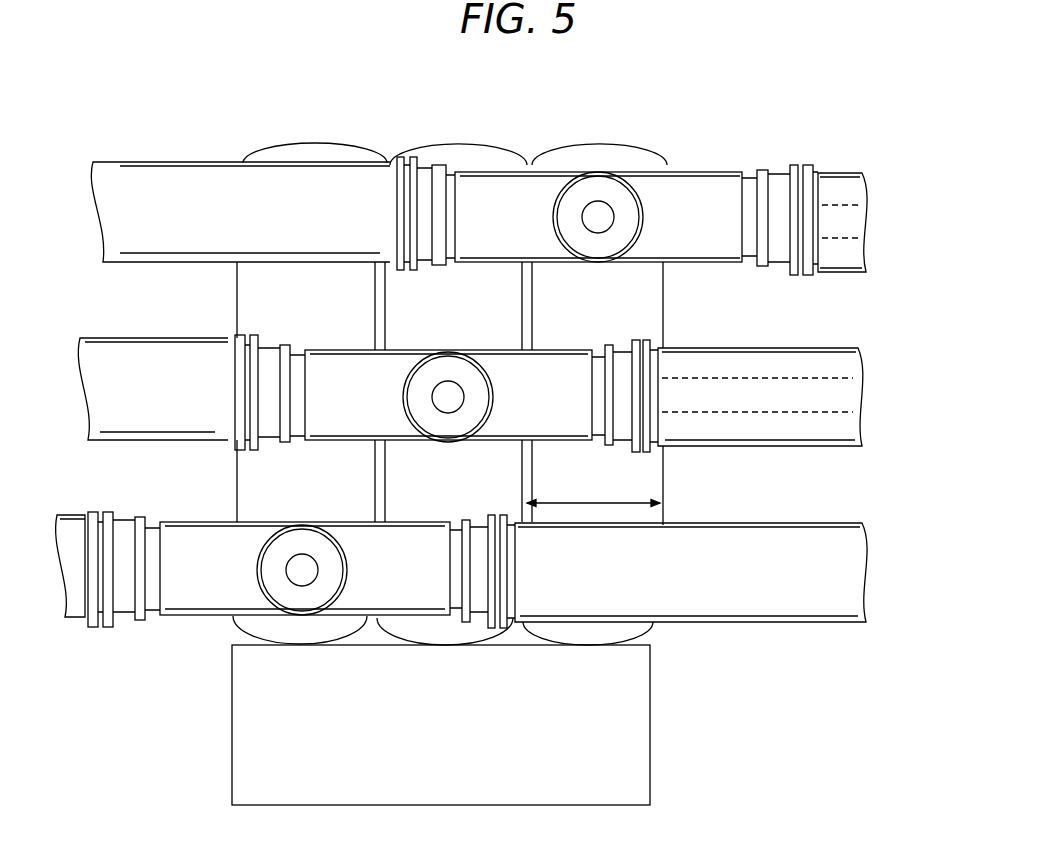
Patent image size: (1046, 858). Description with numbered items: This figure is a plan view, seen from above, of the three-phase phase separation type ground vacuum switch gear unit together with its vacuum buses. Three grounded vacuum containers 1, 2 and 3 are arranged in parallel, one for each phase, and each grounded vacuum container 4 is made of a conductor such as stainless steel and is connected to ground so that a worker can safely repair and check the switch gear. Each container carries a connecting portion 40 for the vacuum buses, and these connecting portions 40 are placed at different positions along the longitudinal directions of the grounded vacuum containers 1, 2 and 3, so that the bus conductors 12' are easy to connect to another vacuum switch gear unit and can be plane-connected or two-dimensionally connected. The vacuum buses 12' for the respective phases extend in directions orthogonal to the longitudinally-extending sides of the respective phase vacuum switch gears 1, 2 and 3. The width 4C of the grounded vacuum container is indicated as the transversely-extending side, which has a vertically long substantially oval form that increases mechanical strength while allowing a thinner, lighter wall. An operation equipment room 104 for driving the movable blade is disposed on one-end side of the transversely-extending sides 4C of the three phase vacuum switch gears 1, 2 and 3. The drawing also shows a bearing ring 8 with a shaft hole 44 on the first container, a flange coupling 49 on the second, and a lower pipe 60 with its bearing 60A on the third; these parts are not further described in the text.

The grounded vacuum container 1 is at (237, 299).
The grounded vacuum container 2 is at (493, 294).
The grounded vacuum container 3 is at (663, 291).
The grounded vacuum container 4 is at (663, 465).
The rotary bearing ring 8 is at (630, 191).
The shaft hole 44 is at (606, 222).
The vacuum bus 12' is at (863, 222).
The flange coupling 49 is at (647, 367).
The connecting portion 40 is at (493, 378).
The width of the grounded vacuum container 4C is at (593, 492).
The lower pipe 60 is at (768, 532).
The lower rotary bearing 60A is at (342, 549).
The operation equipment room 104 is at (650, 700).